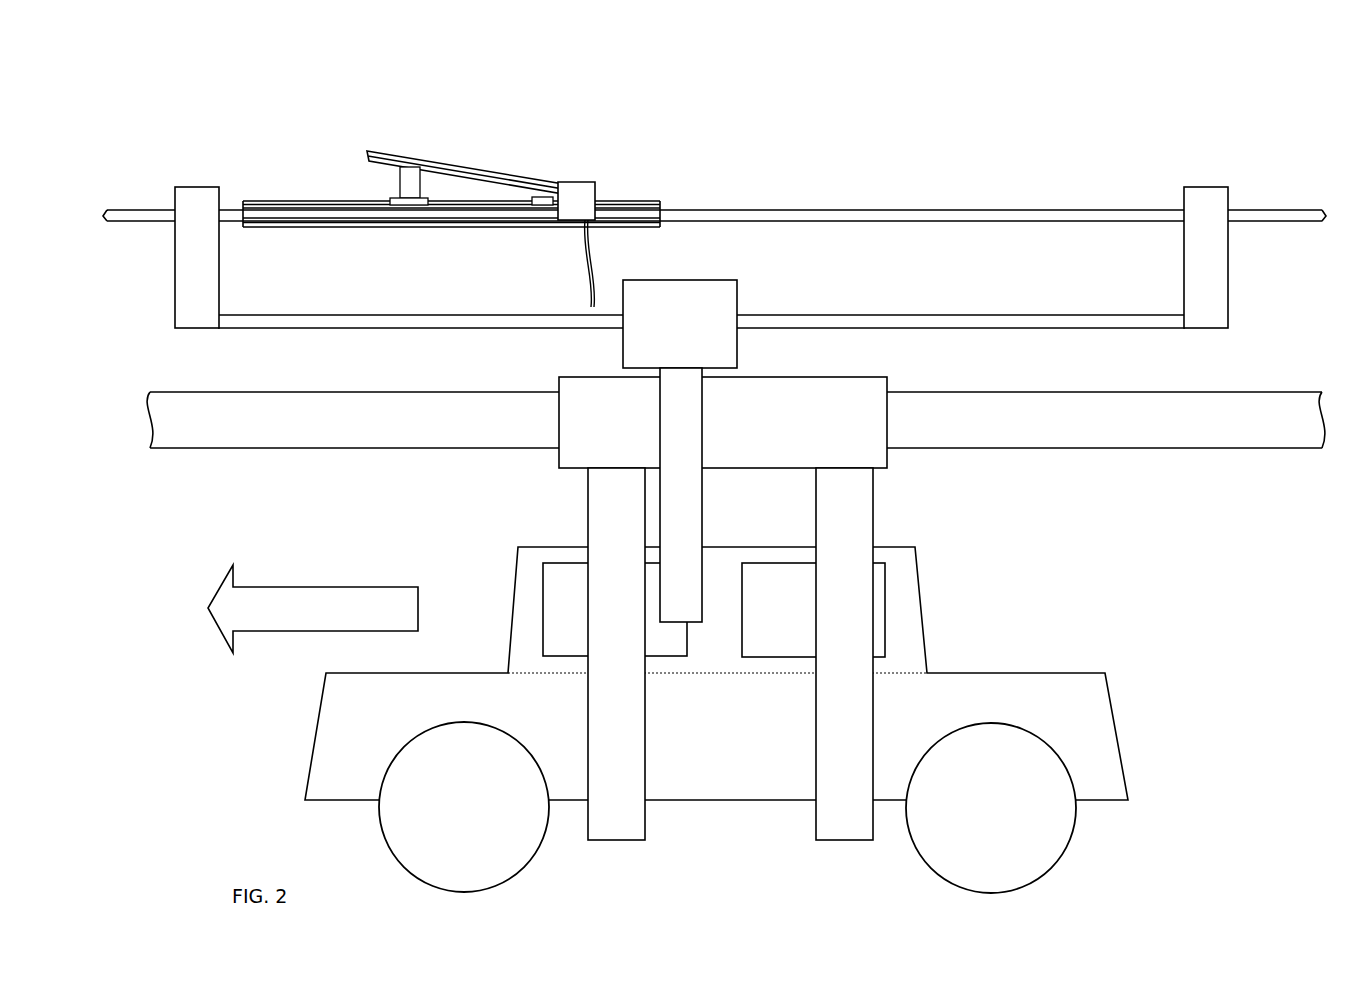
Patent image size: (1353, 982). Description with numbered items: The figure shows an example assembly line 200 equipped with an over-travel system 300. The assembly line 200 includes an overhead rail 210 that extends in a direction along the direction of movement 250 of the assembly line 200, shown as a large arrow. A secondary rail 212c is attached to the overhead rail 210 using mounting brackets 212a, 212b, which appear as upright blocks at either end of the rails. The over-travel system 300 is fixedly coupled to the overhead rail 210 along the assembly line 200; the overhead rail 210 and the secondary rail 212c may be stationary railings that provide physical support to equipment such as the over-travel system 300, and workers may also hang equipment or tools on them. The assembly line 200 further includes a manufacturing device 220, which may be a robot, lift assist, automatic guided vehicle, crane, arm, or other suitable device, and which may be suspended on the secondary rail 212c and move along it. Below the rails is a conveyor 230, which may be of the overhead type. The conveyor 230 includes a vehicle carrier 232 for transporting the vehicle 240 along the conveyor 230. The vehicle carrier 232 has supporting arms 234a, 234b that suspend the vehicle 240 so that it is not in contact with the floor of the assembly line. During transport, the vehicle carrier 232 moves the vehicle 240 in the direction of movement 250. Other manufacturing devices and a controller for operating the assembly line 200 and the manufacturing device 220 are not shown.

The assembly line 200 is at (155, 80).
The overhead rail 210 is at (1103, 209).
The mounting bracket 212a is at (1210, 187).
The mounting bracket 212b is at (197, 187).
The secondary rail 212c is at (960, 314).
The manufacturing device 220 is at (737, 297).
The conveyor 230 is at (1228, 392).
The vehicle carrier 232 is at (565, 470).
The supporting arm 234a is at (630, 842).
The supporting arm 234b is at (860, 842).
The vehicle 240 is at (1047, 672).
The direction of movement 250 is at (287, 590).
The over-travel system 300 is at (604, 148).